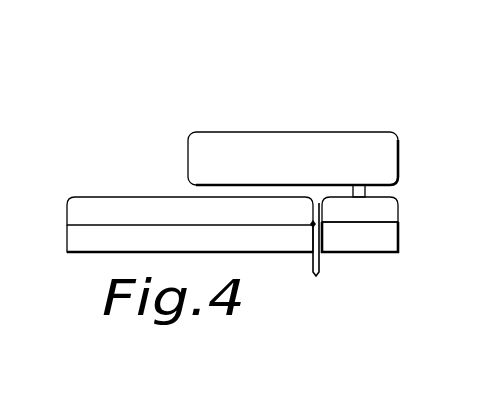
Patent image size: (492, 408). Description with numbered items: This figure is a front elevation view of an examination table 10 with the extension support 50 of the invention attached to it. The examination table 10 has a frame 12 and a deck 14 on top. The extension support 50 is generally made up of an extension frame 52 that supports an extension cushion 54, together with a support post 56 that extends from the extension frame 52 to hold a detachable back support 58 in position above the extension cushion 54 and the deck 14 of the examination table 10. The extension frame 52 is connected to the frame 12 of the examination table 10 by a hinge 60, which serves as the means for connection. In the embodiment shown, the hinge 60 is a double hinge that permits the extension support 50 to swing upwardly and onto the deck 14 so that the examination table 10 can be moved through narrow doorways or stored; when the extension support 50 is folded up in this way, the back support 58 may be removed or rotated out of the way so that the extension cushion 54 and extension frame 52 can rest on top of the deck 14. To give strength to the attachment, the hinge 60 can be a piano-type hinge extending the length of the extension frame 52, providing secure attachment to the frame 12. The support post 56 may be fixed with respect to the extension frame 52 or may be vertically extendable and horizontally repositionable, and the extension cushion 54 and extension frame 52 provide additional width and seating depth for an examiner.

The examination table 10 is at (147, 160).
The frame 12 is at (68, 245).
The deck 14 is at (80, 203).
The extension support 50 is at (381, 112).
The extension frame 52 is at (365, 243).
The extension cushion 54 is at (392, 206).
The support post 56 is at (366, 190).
The back support 58 is at (228, 138).
The hinge 60 is at (313, 290).